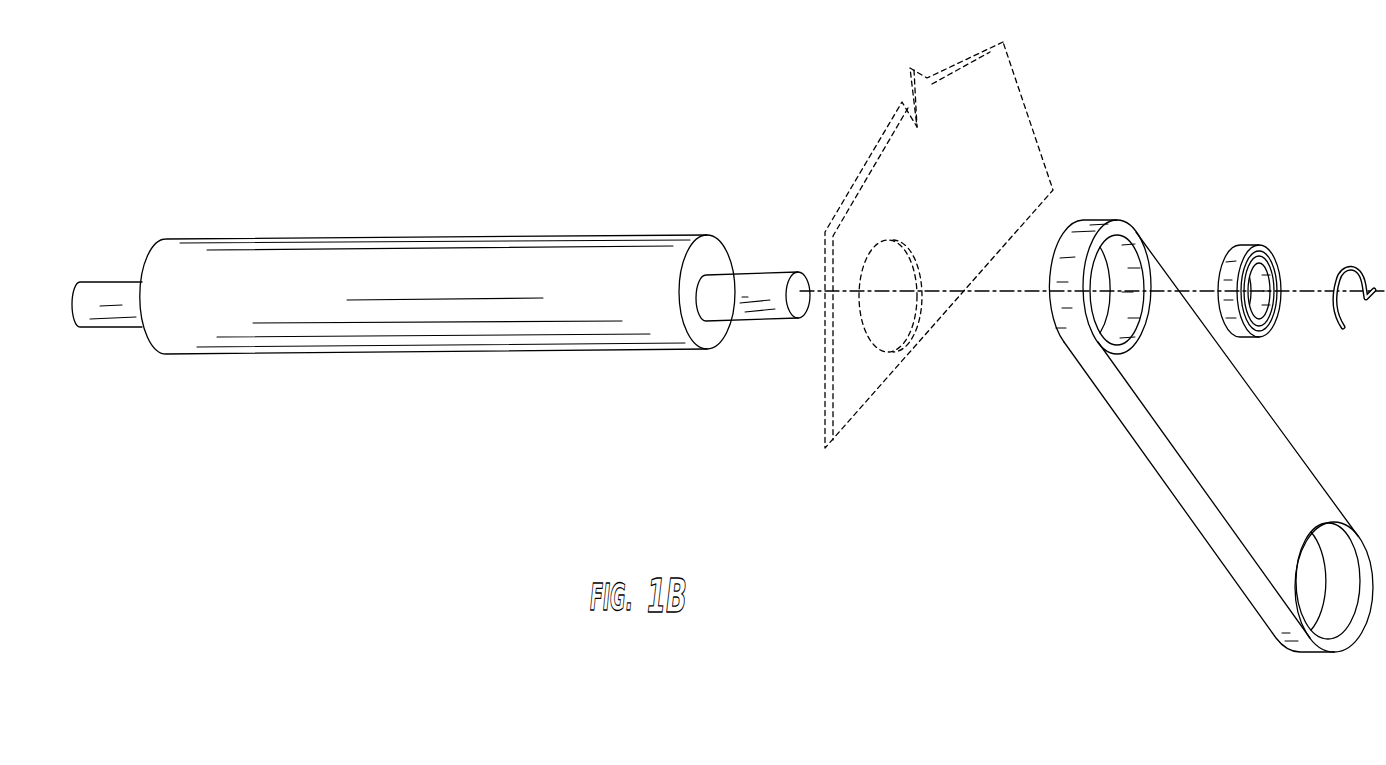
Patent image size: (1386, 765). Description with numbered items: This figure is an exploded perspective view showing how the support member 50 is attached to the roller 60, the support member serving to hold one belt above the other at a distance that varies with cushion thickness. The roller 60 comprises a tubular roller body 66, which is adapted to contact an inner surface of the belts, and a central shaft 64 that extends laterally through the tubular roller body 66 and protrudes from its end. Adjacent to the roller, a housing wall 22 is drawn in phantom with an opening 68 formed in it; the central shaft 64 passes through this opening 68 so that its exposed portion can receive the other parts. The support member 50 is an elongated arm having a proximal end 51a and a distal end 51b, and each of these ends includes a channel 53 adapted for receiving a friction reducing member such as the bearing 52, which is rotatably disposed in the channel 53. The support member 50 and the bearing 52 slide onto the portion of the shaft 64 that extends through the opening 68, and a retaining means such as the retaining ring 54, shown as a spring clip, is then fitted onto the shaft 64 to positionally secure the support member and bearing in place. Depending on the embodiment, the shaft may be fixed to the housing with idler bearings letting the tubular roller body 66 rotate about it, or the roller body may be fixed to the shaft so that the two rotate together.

The mounting plate 22 is at (1043, 147).
The support member 50 is at (1174, 403).
The proximal end 51a is at (1082, 266).
The distal end 51b is at (1285, 647).
The friction reducing member 52 is at (1245, 247).
The channel 53 is at (1098, 307).
The retaining ring 54 is at (1337, 263).
The roller 60 is at (452, 238).
The central shaft 64 is at (762, 265).
The tubular roller body 66 is at (717, 253).
The opening 68 is at (885, 263).